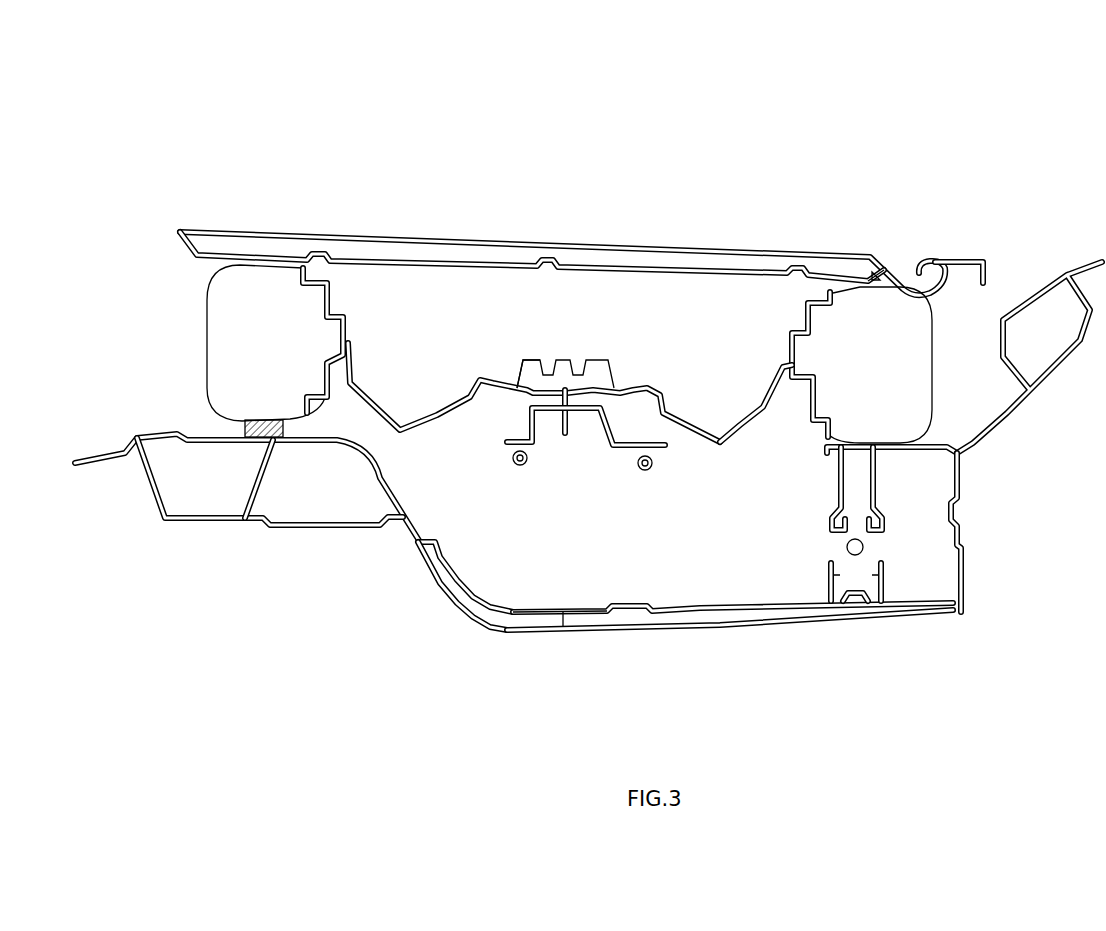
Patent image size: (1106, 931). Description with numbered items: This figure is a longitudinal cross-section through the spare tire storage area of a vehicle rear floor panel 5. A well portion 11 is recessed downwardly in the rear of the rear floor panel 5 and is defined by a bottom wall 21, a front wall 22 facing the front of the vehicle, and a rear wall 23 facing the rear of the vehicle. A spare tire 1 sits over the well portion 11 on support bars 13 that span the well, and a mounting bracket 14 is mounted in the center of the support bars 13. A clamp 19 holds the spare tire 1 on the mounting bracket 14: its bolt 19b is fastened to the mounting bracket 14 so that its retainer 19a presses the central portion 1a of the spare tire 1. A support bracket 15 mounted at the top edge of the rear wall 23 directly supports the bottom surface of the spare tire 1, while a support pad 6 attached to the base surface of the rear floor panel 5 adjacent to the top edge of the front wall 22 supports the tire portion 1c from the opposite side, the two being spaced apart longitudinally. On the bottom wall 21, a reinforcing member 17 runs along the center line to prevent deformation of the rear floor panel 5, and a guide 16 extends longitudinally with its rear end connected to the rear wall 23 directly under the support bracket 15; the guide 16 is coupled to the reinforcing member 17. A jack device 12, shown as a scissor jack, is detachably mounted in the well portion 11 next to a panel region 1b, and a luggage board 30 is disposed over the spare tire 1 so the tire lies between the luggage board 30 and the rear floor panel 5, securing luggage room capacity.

The spare tire 1 is at (886, 170).
The central portion 1a is at (628, 385).
The side panel portion 1b is at (768, 425).
The tire portion 1c is at (225, 343).
The rear floor panel 5 is at (211, 442).
The support pad 6 is at (243, 432).
The well portion 11 is at (605, 573).
The jack device 12 is at (880, 465).
The support bars 13 is at (520, 467).
The mounting bracket 14 is at (603, 430).
The support bracket 15 is at (947, 444).
The guide 16 is at (700, 603).
The reinforcing member 17 is at (523, 606).
The clamp 19 is at (568, 358).
The retainer 19a is at (525, 368).
The bolt 19b is at (560, 398).
The bottom wall 21 is at (760, 630).
The front wall 22 is at (422, 558).
The rear wall 23 is at (958, 522).
The luggage board 30 is at (573, 244).